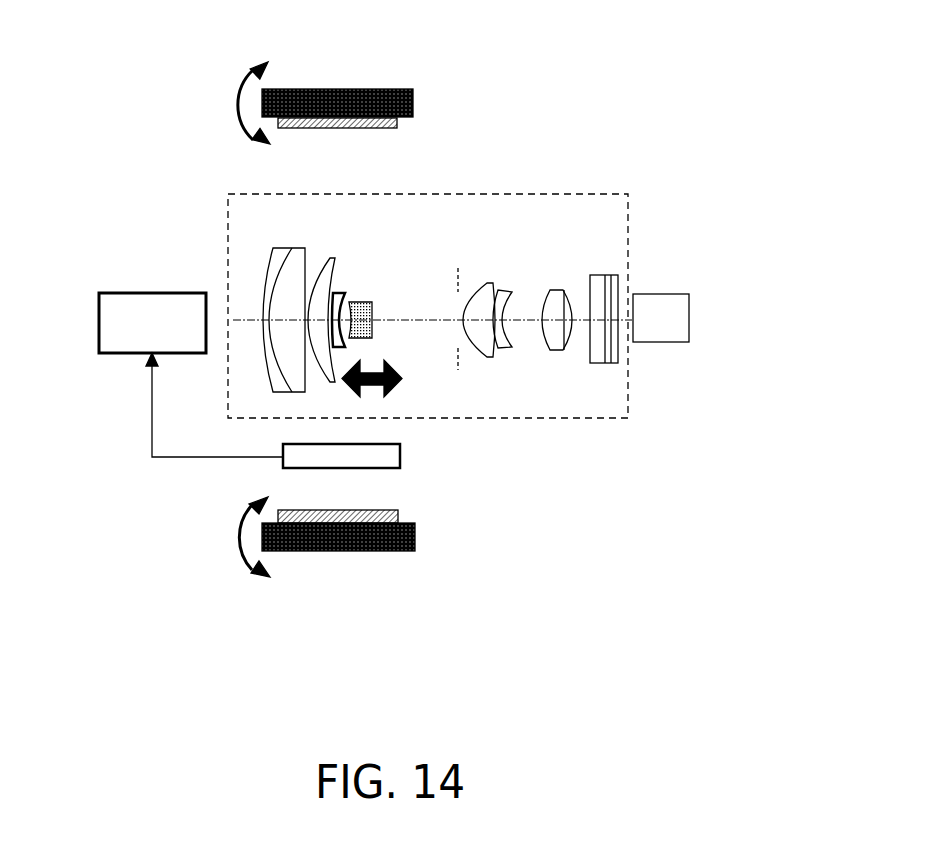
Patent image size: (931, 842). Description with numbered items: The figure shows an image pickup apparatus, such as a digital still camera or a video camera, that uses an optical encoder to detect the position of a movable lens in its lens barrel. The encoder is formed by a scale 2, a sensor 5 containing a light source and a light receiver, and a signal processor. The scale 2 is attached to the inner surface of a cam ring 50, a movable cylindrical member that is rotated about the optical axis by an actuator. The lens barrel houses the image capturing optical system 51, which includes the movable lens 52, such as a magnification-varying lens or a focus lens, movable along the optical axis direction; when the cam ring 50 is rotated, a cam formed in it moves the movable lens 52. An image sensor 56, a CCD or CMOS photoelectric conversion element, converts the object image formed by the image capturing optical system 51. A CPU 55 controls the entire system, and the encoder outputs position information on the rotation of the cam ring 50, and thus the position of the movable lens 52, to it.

The scale 2 is at (398, 120).
The cam ring 50 is at (375, 88).
The image capturing optical system 51 is at (248, 245).
The movable lens 52 is at (367, 300).
The CPU 55 is at (125, 335).
The image sensor 56 is at (670, 328).
The sensor 5 is at (400, 457).